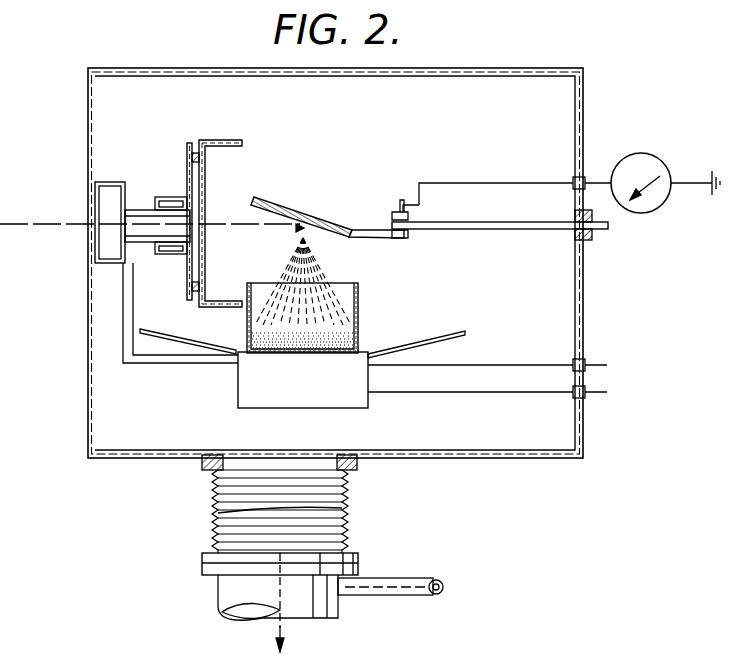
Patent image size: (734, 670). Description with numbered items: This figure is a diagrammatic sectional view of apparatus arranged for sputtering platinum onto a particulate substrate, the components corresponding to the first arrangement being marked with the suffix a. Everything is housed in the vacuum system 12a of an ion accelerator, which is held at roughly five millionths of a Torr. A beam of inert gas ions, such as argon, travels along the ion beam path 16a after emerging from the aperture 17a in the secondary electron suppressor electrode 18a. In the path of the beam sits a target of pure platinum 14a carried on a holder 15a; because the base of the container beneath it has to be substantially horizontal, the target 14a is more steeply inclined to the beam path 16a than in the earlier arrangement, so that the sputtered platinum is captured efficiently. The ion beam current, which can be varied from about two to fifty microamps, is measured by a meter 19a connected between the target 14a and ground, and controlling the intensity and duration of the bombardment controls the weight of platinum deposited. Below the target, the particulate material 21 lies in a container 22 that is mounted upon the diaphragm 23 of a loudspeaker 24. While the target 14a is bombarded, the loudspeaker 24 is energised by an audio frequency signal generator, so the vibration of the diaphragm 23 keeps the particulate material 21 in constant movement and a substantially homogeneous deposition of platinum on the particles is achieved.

The vacuum system 12a is at (422, 118).
The platinum target 14a is at (262, 209).
The holder 15a is at (292, 215).
The ion beam path 16a is at (36, 228).
The aperture 17a is at (207, 223).
The secondary electron suppressor electrode 18a is at (228, 139).
The meter 19a is at (633, 153).
The particulate material 21 is at (247, 340).
The container 22 is at (362, 290).
The diaphragm 23 is at (424, 342).
The loudspeaker 24 is at (256, 391).